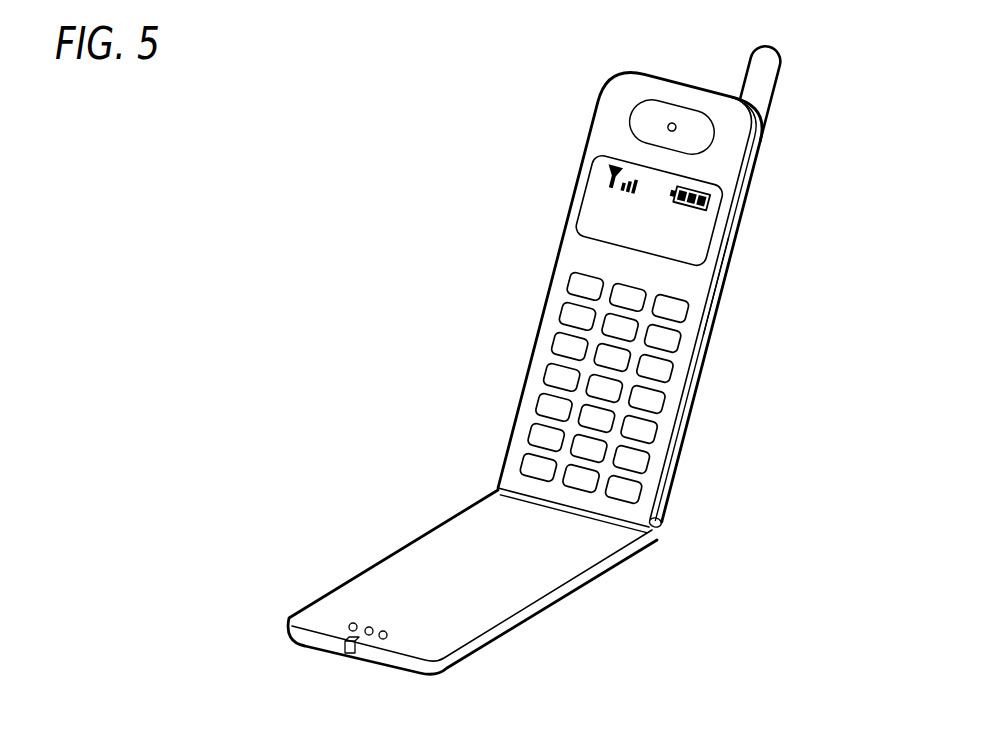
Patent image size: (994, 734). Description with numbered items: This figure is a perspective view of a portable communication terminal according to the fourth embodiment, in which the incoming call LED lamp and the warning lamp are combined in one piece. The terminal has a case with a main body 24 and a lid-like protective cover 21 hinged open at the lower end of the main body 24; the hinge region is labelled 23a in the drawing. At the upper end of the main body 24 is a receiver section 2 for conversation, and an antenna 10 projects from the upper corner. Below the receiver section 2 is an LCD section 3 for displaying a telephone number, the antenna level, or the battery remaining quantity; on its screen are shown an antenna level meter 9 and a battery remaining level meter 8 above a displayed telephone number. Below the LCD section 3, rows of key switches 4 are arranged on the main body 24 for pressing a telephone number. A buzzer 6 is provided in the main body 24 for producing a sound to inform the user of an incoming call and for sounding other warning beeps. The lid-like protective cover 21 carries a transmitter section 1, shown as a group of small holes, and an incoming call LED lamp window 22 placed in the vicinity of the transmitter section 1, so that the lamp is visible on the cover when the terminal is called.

The transmitter section 1 is at (336, 619).
The receiver section 2 is at (667, 108).
The LCD section 3 is at (724, 244).
The key switches 4 is at (522, 394).
The buzzer 6 is at (756, 196).
The battery remaining level meter 8 is at (713, 180).
The antenna level meter 9 is at (595, 153).
The antenna 10 is at (830, 23).
The lid-like protective cover 21 is at (348, 563).
The incoming call LED lamp window 22 is at (331, 634).
The hinge 23a is at (663, 542).
The main body 24 is at (703, 418).